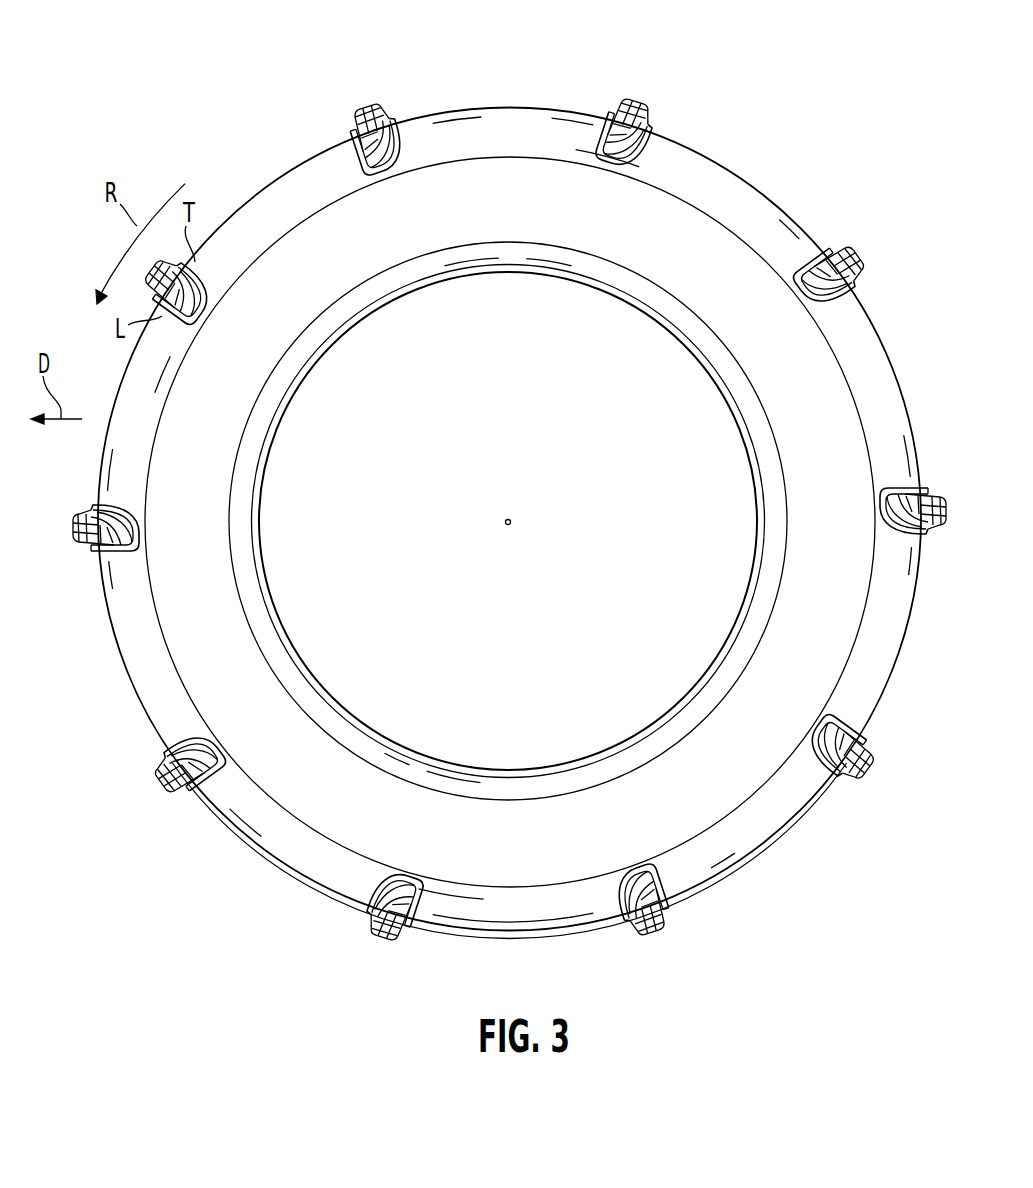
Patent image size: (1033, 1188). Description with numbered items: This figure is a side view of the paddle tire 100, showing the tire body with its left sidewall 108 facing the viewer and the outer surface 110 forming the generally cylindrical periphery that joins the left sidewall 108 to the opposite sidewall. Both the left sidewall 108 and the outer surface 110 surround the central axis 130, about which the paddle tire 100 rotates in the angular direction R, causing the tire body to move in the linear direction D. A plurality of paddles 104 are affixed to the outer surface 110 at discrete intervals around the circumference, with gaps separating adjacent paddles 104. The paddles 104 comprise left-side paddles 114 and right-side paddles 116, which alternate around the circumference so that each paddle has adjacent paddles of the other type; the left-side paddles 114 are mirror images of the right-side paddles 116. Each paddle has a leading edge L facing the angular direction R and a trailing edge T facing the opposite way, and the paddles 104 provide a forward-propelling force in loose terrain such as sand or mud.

The paddle tire 100 is at (167, 99).
The paddles 104 is at (610, 117).
The left sidewall 108 is at (347, 297).
The outer surface 110 is at (733, 172).
The left-side paddles 114 is at (887, 500).
The right-side paddles 116 is at (92, 548).
The axis 130 is at (511, 518).